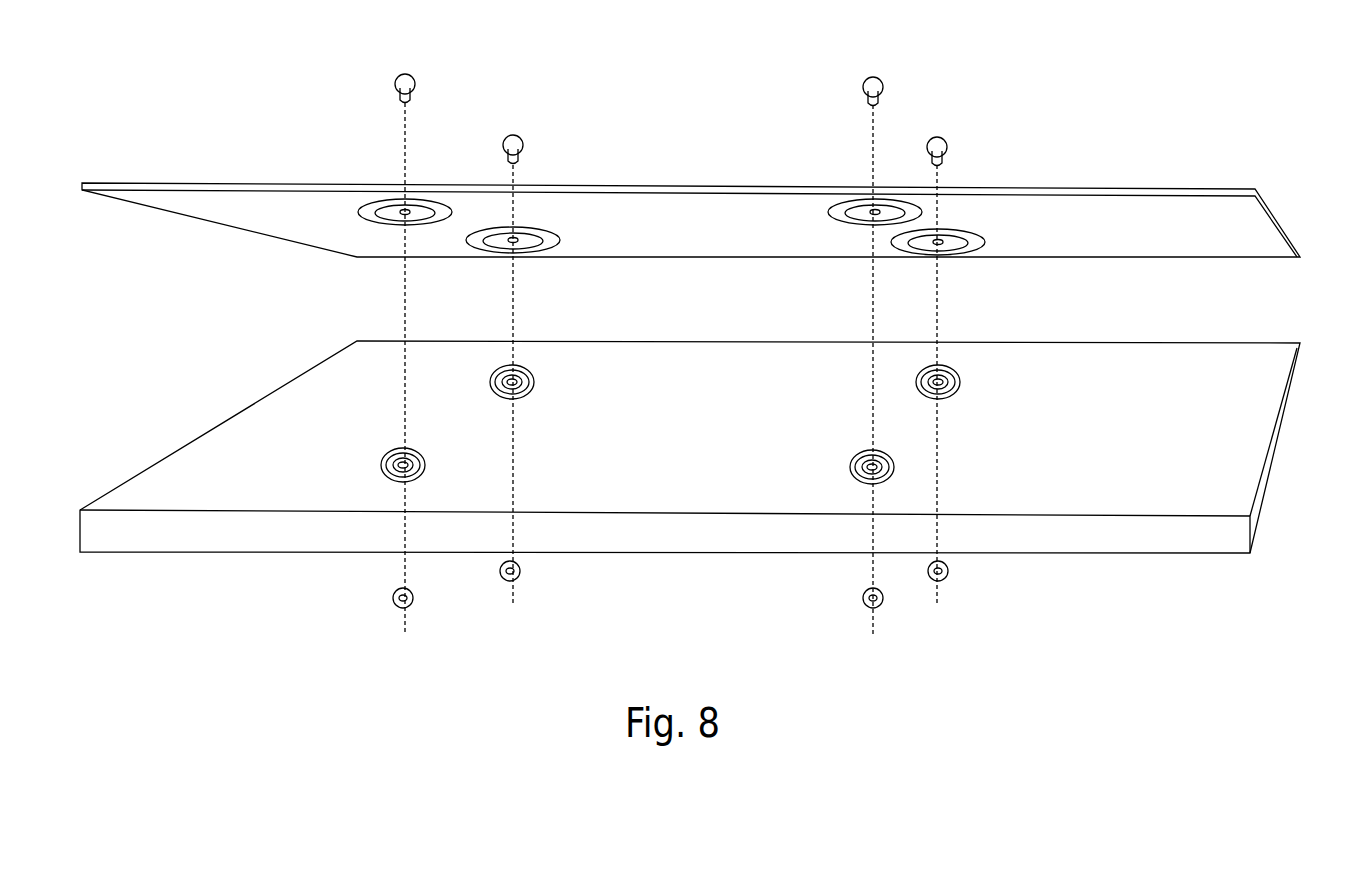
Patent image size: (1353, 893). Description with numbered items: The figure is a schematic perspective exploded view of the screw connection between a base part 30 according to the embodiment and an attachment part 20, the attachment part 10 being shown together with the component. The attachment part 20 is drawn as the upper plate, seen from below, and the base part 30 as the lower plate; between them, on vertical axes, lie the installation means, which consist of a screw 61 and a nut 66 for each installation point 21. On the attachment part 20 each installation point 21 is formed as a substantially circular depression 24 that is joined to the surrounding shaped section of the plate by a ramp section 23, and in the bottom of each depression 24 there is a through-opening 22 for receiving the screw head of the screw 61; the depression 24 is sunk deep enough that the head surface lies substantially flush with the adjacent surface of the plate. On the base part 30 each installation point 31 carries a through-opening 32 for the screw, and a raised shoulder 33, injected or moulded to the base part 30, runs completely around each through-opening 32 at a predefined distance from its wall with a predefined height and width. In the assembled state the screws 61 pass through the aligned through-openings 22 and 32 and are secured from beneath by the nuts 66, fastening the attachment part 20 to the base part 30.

The attachment part 10 is at (706, 80).
The attachment part 20 is at (1233, 168).
The installation point 21 is at (531, 262).
The through-opening 22 is at (407, 216).
The ramp section 23 is at (367, 213).
The depression 24 is at (388, 220).
The base part 30 is at (1285, 453).
The installation point 31 is at (535, 340).
The through-opening 32 is at (403, 443).
The shoulder 33 is at (427, 454).
The screw 61 is at (391, 84).
The nut 66 is at (411, 609).